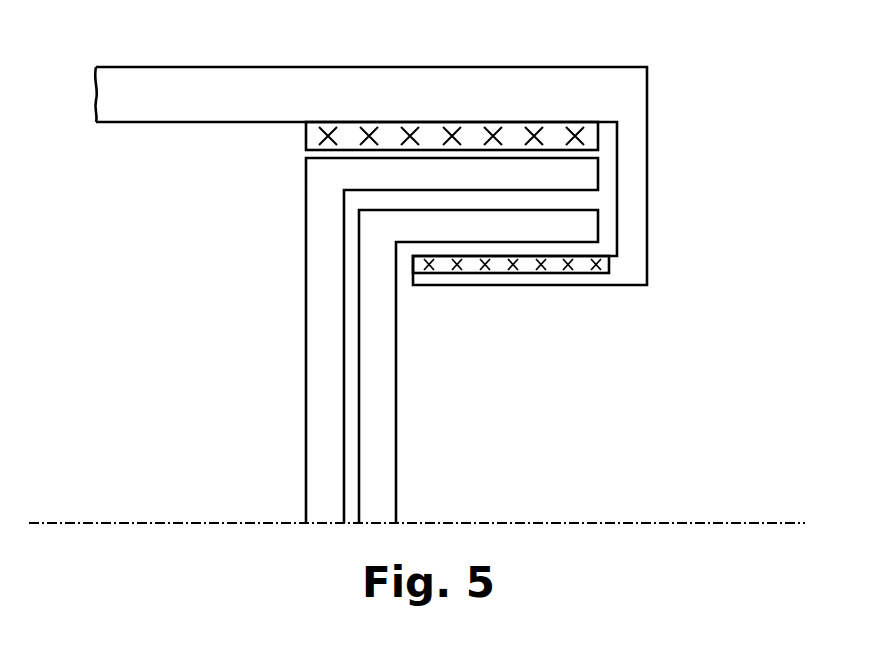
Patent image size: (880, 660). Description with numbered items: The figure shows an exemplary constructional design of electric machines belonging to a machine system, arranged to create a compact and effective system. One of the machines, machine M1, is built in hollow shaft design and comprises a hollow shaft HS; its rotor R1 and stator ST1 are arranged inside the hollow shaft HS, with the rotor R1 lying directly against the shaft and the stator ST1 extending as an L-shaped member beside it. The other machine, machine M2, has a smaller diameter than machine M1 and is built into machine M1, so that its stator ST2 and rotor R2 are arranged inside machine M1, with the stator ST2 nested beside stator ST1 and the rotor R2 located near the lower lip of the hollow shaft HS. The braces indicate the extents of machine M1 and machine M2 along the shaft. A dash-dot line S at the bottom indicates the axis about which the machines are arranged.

The hollow shaft HS is at (627, 93).
The rotor R1 is at (475, 130).
The rotor R2 is at (497, 265).
The stator ST1 is at (342, 175).
The stator ST2 is at (405, 230).
The machine M1 is at (653, 123).
The machine M2 is at (653, 205).
The substrate / base surface S is at (635, 522).